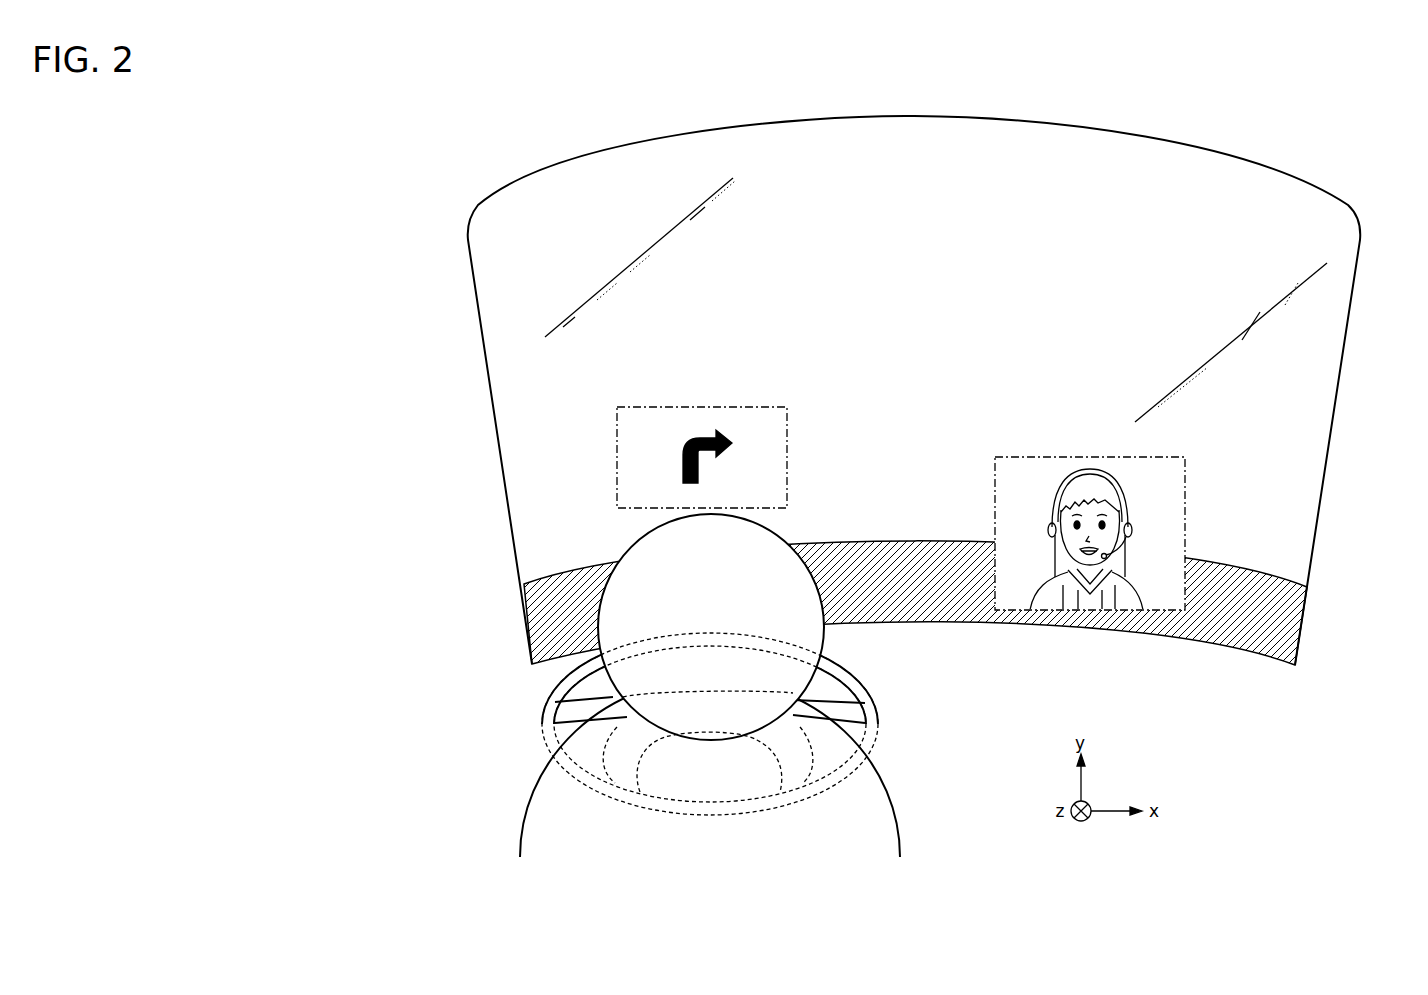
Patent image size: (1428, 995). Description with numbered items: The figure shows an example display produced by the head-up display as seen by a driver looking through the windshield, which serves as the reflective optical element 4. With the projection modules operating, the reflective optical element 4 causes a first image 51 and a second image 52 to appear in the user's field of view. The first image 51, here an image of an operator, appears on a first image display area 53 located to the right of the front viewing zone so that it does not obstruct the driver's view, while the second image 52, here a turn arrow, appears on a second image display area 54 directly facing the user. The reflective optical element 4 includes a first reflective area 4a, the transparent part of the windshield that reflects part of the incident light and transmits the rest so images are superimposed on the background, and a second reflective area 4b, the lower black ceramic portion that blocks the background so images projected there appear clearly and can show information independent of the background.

The reflective optical element 4 is at (1340, 353).
The first reflective area 4a is at (1278, 473).
The second reflective area 4b is at (1258, 613).
The first image 51 is at (1137, 583).
The second image 52 is at (683, 457).
The first image display area 53 is at (1058, 457).
The second image display area 54 is at (696, 407).